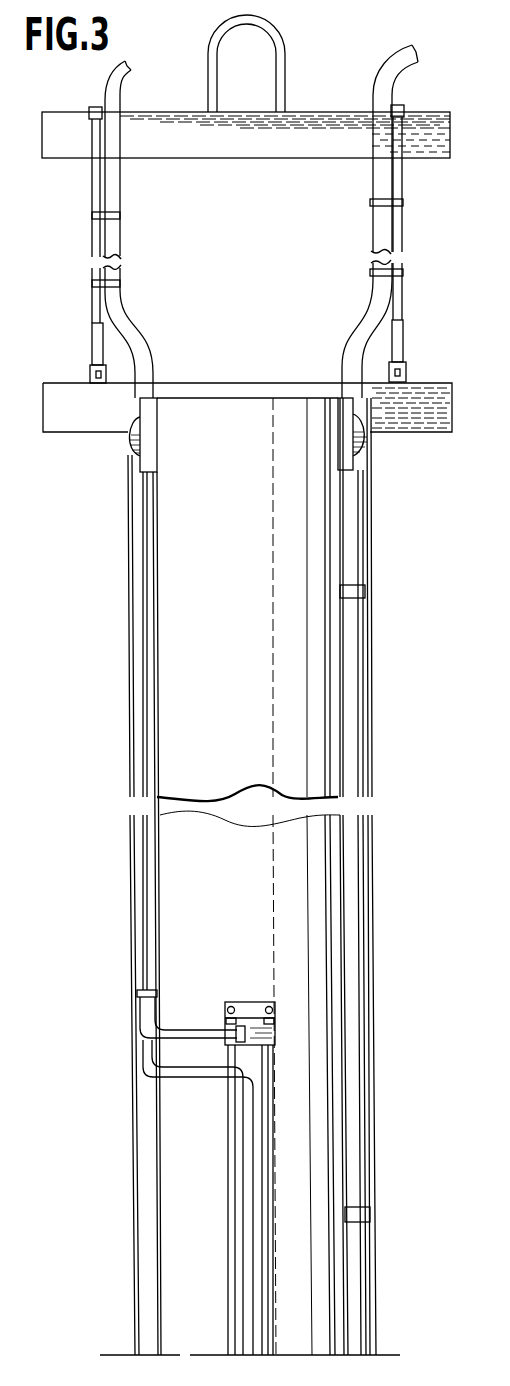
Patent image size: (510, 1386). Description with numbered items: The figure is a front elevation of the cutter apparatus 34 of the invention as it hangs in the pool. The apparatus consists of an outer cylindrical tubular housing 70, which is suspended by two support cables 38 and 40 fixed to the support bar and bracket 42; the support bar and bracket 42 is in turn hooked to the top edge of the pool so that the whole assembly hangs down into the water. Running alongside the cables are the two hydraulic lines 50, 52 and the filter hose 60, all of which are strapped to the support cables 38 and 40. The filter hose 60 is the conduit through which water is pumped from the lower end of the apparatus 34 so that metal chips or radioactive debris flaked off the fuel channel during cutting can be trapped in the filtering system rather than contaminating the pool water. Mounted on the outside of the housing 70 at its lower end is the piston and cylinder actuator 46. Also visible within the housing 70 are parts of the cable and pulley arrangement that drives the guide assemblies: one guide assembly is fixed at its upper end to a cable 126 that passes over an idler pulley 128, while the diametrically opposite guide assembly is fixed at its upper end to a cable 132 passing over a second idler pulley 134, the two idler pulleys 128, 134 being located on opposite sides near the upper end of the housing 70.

The cutter apparatus 34 is at (380, 592).
The support cable 38 is at (92, 240).
The support cable 40 is at (398, 230).
The support bar and bracket 42 is at (250, 150).
The piston and cylinder actuator 46 is at (282, 1116).
The hydraulic line 50 is at (153, 632).
The hydraulic line 52 is at (148, 685).
The filter hose 60 is at (403, 72).
The outer cylindrical tubular housing 70 is at (318, 527).
The cable 126 is at (373, 482).
The idler pulley 128 is at (368, 440).
The cable 132 is at (128, 508).
The second idler pulley 134 is at (131, 440).